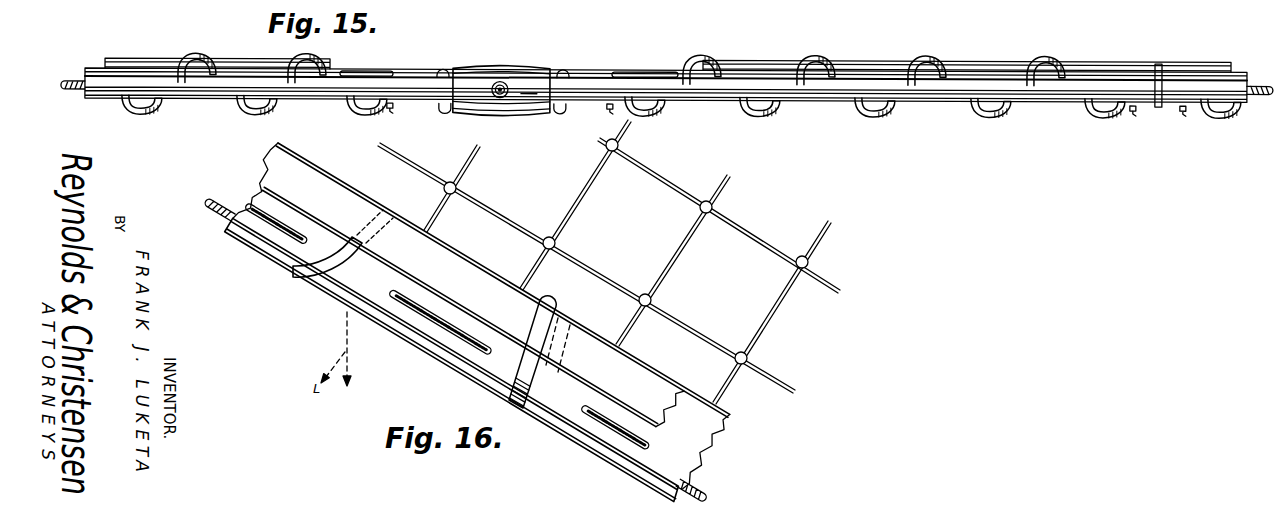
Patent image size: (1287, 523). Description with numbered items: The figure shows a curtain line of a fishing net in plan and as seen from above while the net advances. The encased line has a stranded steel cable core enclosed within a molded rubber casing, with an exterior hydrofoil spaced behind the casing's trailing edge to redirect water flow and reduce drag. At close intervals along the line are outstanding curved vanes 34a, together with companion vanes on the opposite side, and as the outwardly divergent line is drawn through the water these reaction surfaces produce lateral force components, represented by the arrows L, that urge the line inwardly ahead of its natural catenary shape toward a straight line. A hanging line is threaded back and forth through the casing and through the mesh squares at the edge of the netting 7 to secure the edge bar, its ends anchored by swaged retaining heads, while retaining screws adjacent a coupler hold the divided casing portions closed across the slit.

The grid wire 7 is at (697, 220).
The vane 34a is at (297, 274).